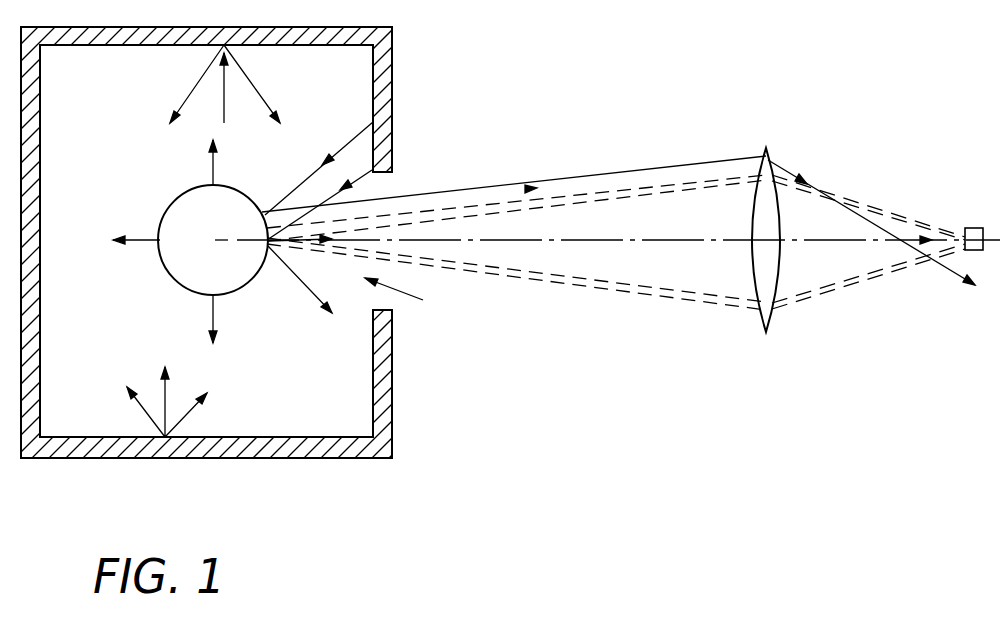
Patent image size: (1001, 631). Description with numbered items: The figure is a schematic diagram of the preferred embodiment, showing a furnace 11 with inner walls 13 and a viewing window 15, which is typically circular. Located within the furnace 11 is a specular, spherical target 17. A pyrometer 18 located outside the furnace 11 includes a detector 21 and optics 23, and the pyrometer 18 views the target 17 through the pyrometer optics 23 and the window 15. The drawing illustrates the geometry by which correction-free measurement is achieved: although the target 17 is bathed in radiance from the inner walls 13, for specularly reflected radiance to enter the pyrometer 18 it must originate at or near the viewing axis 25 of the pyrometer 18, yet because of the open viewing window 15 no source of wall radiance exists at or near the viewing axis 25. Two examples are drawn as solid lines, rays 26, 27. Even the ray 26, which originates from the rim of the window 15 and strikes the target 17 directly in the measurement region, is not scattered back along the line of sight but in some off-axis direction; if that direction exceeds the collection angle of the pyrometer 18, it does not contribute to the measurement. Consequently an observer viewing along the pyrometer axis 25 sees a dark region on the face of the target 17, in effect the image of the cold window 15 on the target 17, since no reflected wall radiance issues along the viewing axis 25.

The furnace 11 is at (410, 242).
The inner walls 13 is at (104, 45).
The viewing window 15 is at (409, 298).
The specular, spherical target 17 is at (187, 202).
The pyrometer 18 is at (847, 239).
The detector 21 is at (975, 228).
The optics 23 is at (765, 332).
The viewing axis 25 is at (650, 241).
The ray 26 is at (376, 172).
The ray 27 is at (319, 168).